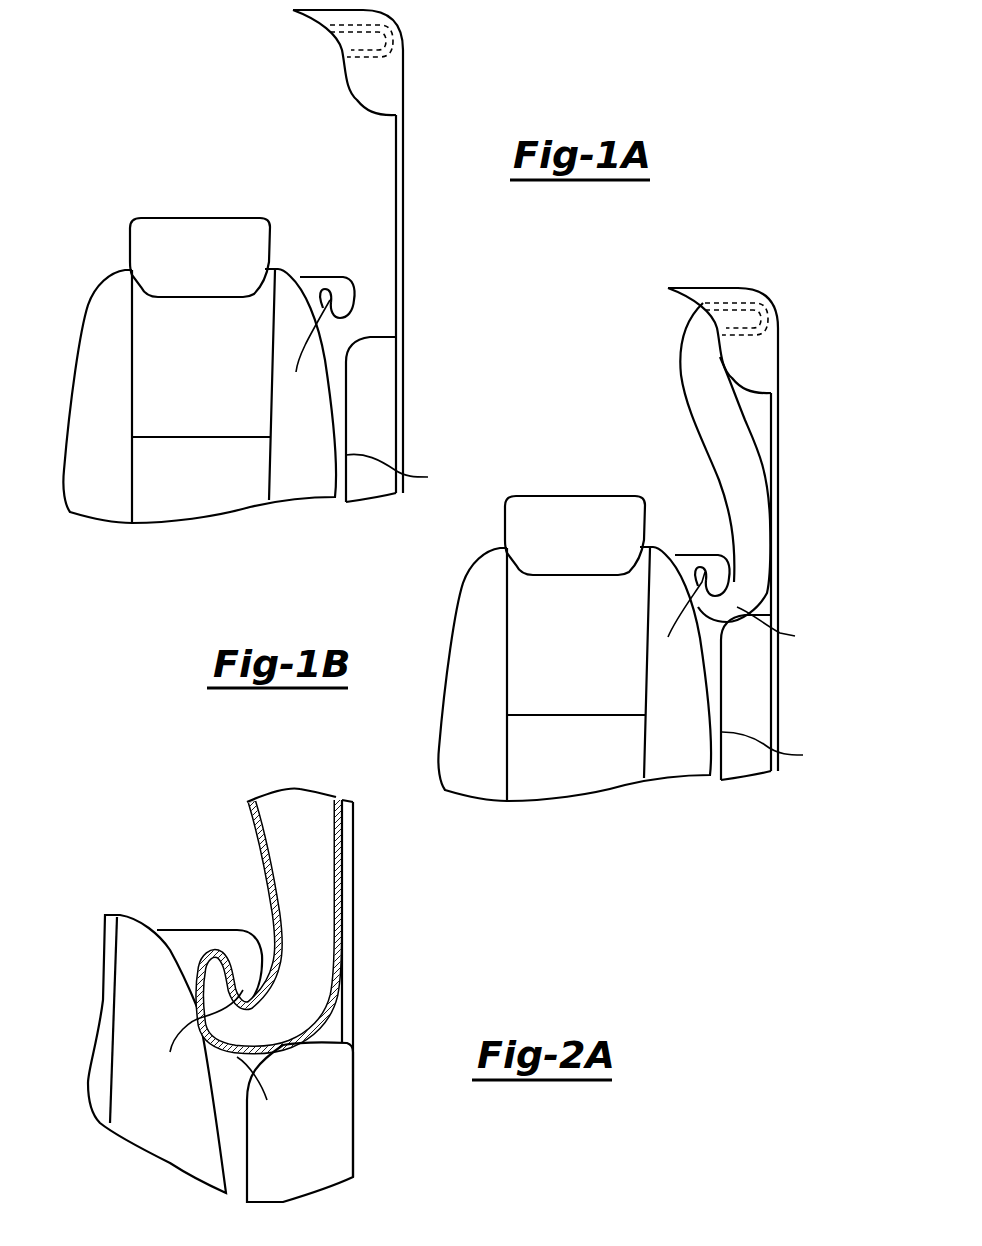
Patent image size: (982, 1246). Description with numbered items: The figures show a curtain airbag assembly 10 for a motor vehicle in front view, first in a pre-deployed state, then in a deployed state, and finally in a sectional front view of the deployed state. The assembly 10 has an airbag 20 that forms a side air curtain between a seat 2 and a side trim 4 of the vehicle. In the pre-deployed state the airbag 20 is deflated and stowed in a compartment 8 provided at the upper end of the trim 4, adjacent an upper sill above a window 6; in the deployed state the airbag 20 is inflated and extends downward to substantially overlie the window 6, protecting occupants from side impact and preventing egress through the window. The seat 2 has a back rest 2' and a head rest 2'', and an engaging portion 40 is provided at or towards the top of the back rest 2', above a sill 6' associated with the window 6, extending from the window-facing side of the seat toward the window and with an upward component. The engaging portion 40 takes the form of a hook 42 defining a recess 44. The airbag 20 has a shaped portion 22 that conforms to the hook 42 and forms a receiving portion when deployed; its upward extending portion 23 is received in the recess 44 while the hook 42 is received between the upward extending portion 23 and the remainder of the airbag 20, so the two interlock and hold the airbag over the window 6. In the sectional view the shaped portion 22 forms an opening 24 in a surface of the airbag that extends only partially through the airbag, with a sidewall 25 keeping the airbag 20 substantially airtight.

In FIG. 1A, the seat 2 is at (191, 370).
In FIG. 1B, the seat 2 is at (566, 648).
In FIG. 1A, the back rest 2' is at (199, 387).
In FIG. 1B, the back rest 2' is at (574, 666).
In FIG. 2A, the back rest 2' is at (136, 1054).
In FIG. 1A, the head rest 2'' is at (175, 257).
In FIG. 1B, the head rest 2'' is at (550, 535).
In FIG. 1A, the side trim 4 is at (396, 472).
In FIG. 1B, the side trim 4 is at (772, 750).
In FIG. 2A, the side trim 4 is at (247, 1150).
In FIG. 1A, the window 6 is at (427, 304).
In FIG. 1B, the window 6 is at (803, 582).
In FIG. 2A, the window 6 is at (376, 988).
In FIG. 1A, the sill 6' is at (371, 419).
In FIG. 1B, the sill 6' is at (746, 697).
In FIG. 1A, the compartment 8 is at (393, 41).
In FIG. 1B, the compartment 8 is at (780, 318).
In FIG. 1A, the curtain airbag assembly 10 is at (418, 63).
In FIG. 1B, the curtain airbag assembly 10 is at (795, 474).
In FIG. 1A, the airbag 20 is at (353, 40).
In FIG. 1B, the airbag 20 is at (713, 420).
In FIG. 2A, the airbag 20 is at (308, 919).
In FIG. 1B, the shaped portion 22 is at (781, 628).
In FIG. 2A, the shaped portion 22 is at (260, 1092).
In FIG. 1B, the upward extending portion 23 is at (681, 617).
In FIG. 2A, the opening 24 is at (200, 1034).
In FIG. 2A, the sidewall 25 is at (280, 993).
In FIG. 1A, the engaging portion 40 is at (313, 285).
In FIG. 1B, the engaging portion 40 is at (690, 562).
In FIG. 2A, the engaging portion 40 is at (188, 940).
In FIG. 1A, the hook 42 is at (343, 278).
In FIG. 1B, the hook 42 is at (718, 560).
In FIG. 1A, the recess 44 is at (307, 348).